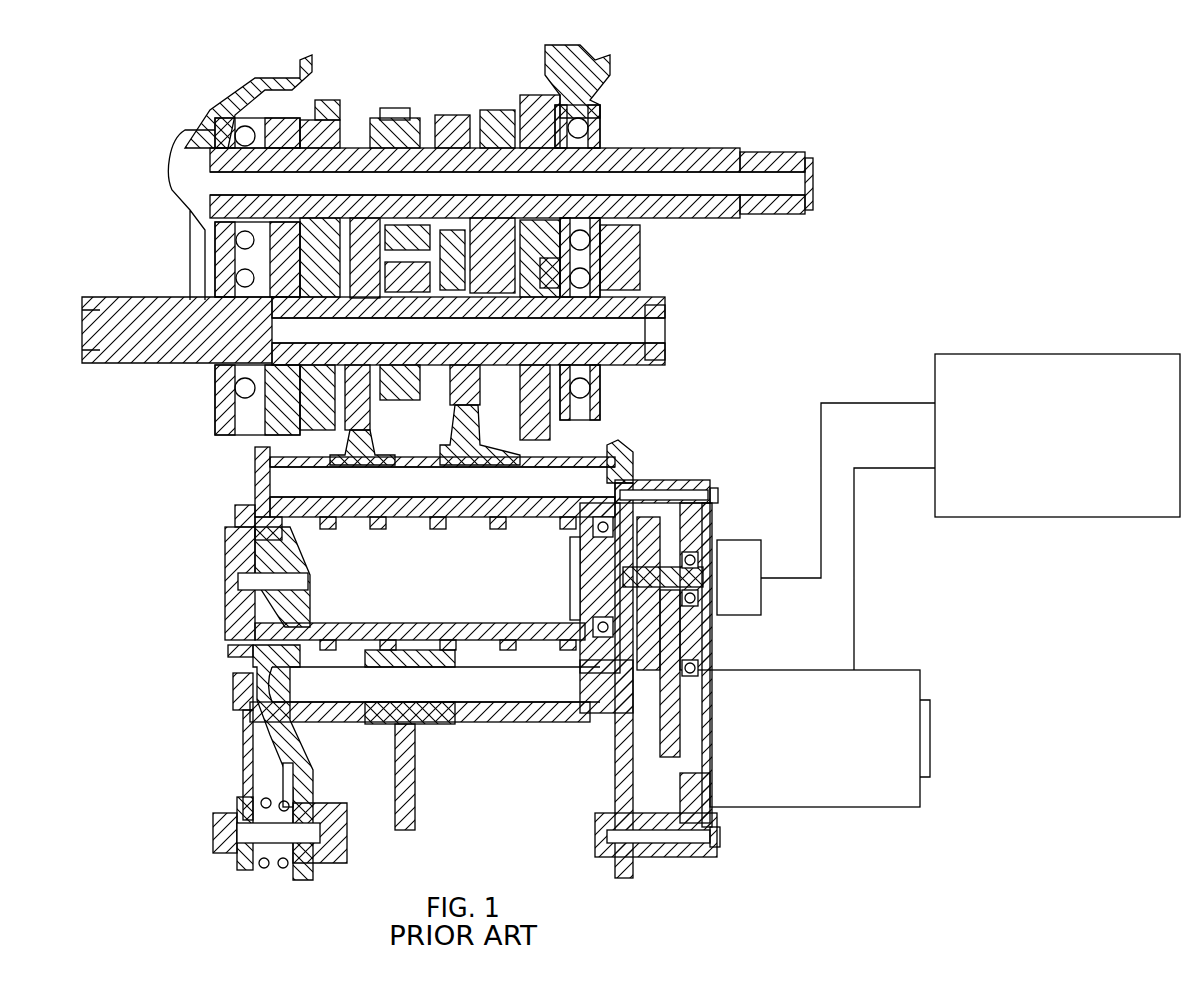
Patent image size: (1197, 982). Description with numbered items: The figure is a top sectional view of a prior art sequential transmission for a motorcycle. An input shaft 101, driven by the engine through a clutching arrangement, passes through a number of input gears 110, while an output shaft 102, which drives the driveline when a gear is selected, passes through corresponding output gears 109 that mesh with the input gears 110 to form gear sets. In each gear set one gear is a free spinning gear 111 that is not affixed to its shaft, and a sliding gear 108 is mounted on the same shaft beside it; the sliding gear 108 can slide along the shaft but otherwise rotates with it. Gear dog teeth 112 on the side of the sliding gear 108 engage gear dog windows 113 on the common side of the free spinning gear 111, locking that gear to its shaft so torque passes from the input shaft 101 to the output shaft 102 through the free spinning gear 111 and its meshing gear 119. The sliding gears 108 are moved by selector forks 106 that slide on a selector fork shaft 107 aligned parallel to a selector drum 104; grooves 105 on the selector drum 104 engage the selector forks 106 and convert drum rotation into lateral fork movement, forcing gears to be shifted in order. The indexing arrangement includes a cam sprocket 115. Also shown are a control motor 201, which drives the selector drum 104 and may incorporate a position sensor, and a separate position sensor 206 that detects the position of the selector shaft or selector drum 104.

The input shaft 101 is at (690, 148).
The output shaft 102 is at (150, 297).
The selector drum 104 is at (613, 615).
The grooves 105 is at (480, 640).
The selector forks 106 is at (460, 452).
The selector fork shaft 107 is at (312, 464).
The sliding gear 108 is at (458, 380).
The output gears 109 is at (228, 460).
The input gears 110 is at (385, 72).
The free spinning gear 111 is at (555, 425).
The gear dog teeth 112 is at (530, 282).
The gear dog windows 113 is at (550, 277).
The cam sprocket 115 is at (240, 510).
The meshing gear 119 is at (540, 133).
The control motor 201 is at (793, 747).
The position sensor 206 is at (1042, 432).